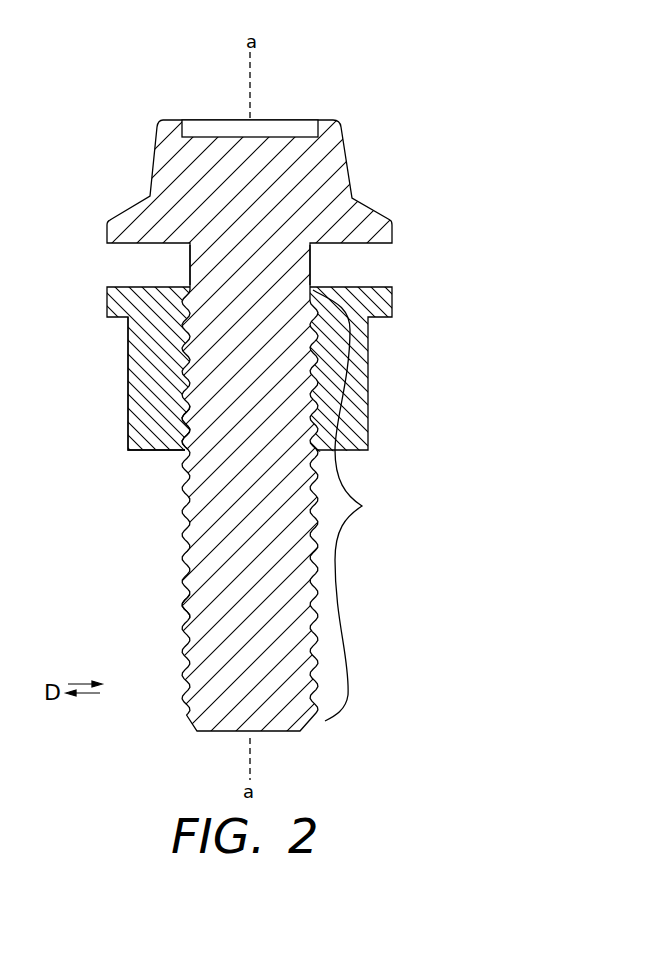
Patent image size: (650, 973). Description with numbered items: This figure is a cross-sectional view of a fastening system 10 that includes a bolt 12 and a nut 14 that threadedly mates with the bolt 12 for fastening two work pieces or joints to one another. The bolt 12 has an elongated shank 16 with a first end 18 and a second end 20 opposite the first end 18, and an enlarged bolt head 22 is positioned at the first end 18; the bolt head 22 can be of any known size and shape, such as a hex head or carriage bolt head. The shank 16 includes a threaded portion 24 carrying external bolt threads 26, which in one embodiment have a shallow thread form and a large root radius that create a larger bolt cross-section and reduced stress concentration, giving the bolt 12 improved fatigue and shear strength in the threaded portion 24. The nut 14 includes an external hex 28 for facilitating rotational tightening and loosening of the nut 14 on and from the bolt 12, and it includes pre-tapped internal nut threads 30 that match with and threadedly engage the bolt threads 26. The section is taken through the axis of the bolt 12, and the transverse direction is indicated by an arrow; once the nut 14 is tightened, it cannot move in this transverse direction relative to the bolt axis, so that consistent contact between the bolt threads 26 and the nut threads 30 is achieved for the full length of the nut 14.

The fastening system 10 is at (325, 430).
The bolt 12 is at (325, 430).
The nut 14 is at (286, 359).
The elongated shank 16 is at (180, 497).
The first end 18 is at (188, 245).
The second end 20 is at (212, 731).
The bolt head 22 is at (170, 122).
The threaded portion 24 is at (355, 505).
The bolt threads 26 is at (186, 619).
The external hex 28 is at (146, 372).
The nut threads 30 is at (188, 425).